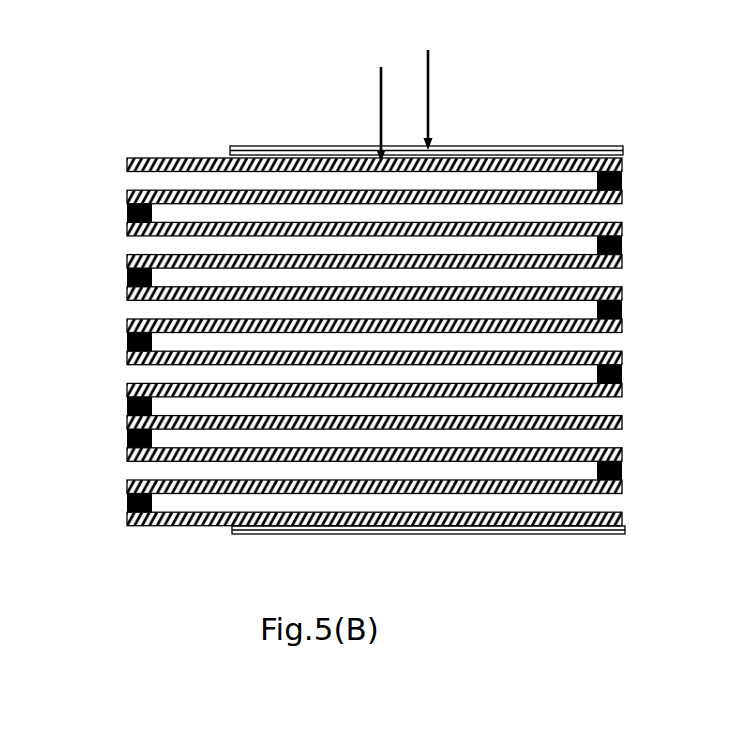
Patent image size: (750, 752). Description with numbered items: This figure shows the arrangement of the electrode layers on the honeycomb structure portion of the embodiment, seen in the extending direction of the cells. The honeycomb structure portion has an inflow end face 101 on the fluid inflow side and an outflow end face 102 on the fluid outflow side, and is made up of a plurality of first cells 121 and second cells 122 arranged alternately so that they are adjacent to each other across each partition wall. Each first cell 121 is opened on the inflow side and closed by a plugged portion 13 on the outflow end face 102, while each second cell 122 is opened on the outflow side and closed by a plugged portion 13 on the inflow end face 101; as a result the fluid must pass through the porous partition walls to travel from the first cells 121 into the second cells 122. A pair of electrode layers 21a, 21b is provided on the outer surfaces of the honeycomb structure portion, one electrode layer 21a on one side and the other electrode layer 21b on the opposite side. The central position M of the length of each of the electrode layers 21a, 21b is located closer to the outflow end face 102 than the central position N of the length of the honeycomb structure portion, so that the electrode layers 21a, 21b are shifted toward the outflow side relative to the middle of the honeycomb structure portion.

The first cell 121 is at (137, 182).
The second cell 122 is at (612, 212).
The plugged portion 13 is at (127, 213).
The electrode layer 21a is at (488, 147).
The electrode layer 21b is at (492, 535).
The inflow end face 101 is at (77, 338).
The outflow end face 102 is at (674, 342).
The central position of the honeycomb structure portion length N is at (381, 96).
The central position of the electrode layer length M is at (427, 82).